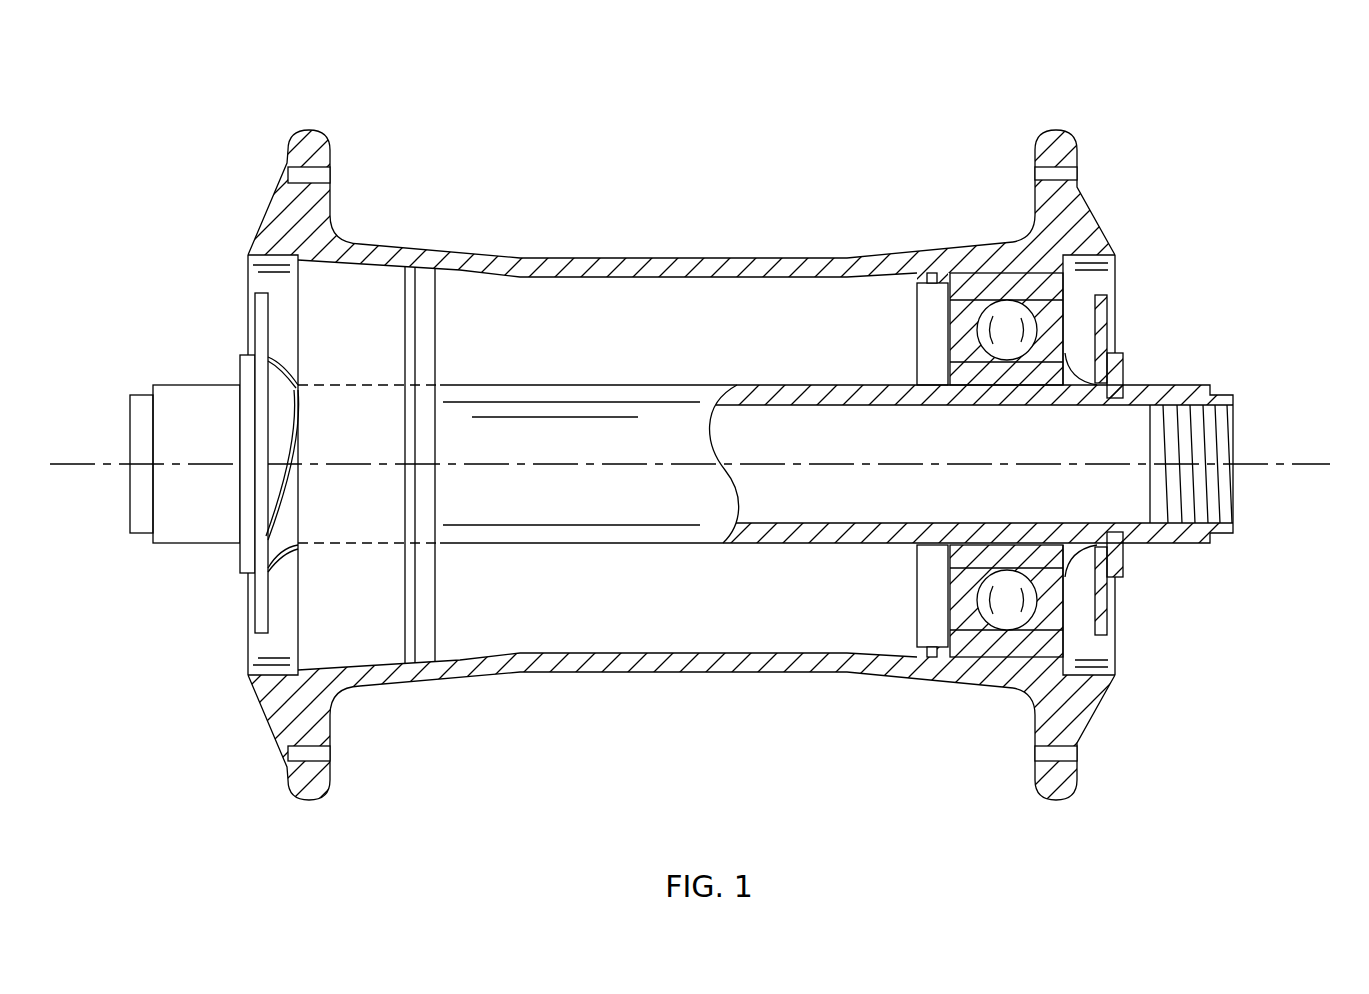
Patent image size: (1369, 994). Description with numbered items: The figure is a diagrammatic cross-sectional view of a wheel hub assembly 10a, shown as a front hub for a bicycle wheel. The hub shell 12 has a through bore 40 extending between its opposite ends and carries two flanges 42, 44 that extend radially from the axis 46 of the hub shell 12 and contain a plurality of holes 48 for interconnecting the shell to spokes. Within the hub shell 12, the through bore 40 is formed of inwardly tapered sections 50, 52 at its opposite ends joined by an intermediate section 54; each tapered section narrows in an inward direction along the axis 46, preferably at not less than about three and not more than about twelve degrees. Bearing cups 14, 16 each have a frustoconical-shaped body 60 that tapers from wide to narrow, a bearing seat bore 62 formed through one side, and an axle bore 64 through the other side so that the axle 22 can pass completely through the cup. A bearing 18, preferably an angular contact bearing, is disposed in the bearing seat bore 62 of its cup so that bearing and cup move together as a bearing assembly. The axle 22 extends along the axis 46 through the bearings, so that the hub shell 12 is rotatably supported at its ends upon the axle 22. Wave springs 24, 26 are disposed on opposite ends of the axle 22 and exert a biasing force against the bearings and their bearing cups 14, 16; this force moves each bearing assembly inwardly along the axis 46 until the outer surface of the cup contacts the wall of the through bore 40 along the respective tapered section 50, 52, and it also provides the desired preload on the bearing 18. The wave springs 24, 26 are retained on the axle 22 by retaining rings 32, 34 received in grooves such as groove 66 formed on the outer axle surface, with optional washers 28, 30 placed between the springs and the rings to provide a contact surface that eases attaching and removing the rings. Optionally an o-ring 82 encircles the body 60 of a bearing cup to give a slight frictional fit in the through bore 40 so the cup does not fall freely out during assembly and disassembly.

The wheel hub assembly 10a is at (772, 150).
The hub shell 12 is at (622, 258).
The bearing cup 14 is at (1097, 217).
The bearing cup 16 is at (380, 347).
The bearing 18 is at (1062, 290).
The axle 22 is at (712, 523).
The wave spring 24 is at (1093, 358).
The wave spring 26 is at (292, 493).
The washer 28 is at (1097, 625).
The washer 30 is at (263, 322).
The retaining ring 32 is at (1112, 570).
The retaining ring 34 is at (242, 577).
The through bore 40 is at (807, 317).
The flange 42 is at (1053, 131).
The flange 44 is at (290, 137).
The axis 46 is at (1290, 464).
The holes 48 is at (293, 175).
The tapered section 50 is at (988, 273).
The tapered section 52 is at (366, 250).
The intermediate section 54 is at (697, 294).
The frustoconical-shaped body 60 is at (387, 273).
The bearing seat bore 62 is at (960, 273).
The axle bore 64 is at (923, 592).
The groove 66 is at (1123, 373).
The o-ring 82 is at (918, 278).